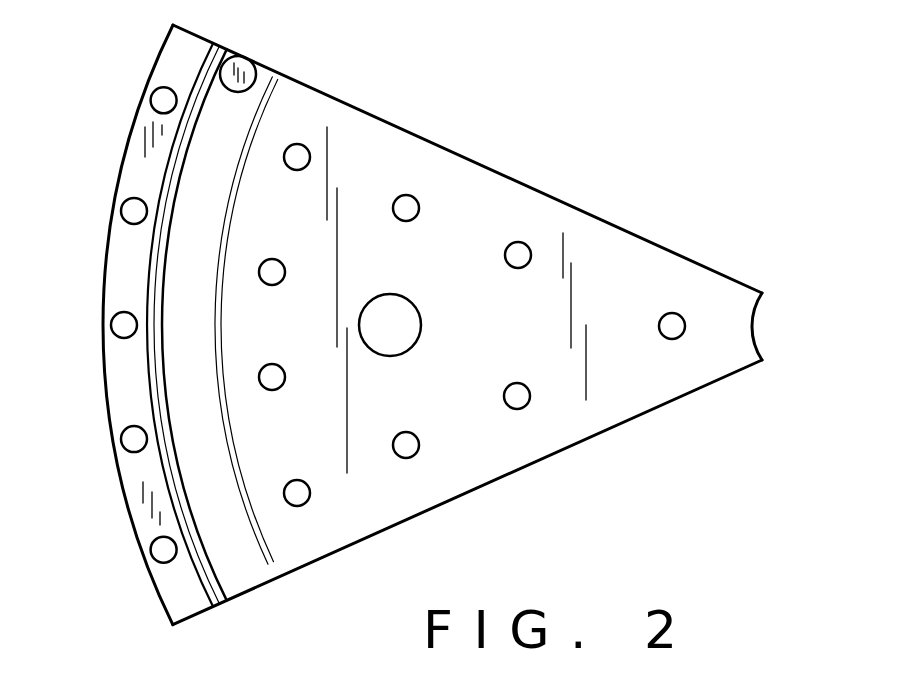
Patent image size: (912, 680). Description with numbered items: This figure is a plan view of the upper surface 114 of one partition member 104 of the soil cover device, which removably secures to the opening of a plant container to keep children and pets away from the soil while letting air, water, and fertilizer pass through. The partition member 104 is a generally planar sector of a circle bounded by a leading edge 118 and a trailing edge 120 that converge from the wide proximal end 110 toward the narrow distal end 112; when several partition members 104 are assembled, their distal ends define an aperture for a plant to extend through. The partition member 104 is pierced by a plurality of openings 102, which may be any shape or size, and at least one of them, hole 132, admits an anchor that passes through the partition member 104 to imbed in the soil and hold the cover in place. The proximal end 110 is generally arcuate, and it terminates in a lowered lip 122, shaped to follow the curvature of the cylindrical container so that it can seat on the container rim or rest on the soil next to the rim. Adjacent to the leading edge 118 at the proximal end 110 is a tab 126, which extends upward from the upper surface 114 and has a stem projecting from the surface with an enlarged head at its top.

The openings 102 is at (521, 242).
The partition member 104 is at (475, 325).
The proximal end 110 is at (187, 280).
The distal end 112 is at (723, 333).
The upper surface 114 is at (520, 333).
The leading edge 118 is at (473, 162).
The trailing edge 120 is at (550, 453).
The lowered lip 122 is at (122, 483).
The tab 126 is at (241, 70).
The hole 132 is at (373, 355).